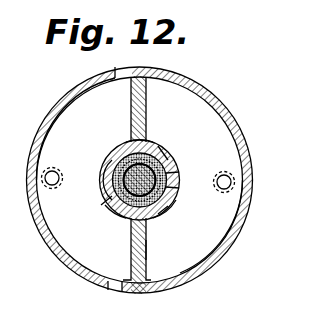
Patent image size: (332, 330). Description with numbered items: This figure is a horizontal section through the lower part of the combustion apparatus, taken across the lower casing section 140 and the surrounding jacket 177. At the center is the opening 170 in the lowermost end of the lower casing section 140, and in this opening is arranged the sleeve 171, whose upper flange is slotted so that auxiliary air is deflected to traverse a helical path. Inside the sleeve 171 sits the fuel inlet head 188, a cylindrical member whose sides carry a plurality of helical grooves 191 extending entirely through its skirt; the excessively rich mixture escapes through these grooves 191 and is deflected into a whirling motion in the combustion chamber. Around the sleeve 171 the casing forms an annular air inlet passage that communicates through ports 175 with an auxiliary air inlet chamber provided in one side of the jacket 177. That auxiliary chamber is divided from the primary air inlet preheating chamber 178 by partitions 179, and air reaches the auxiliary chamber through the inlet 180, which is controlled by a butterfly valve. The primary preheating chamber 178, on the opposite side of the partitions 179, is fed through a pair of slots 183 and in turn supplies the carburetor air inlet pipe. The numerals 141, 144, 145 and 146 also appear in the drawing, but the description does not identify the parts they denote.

The lower casing section 140 is at (140, 185).
The hub bore 141 is at (118, 183).
The hub flange 144 is at (122, 203).
The hub flange 145 is at (152, 218).
The web rib 146 is at (147, 240).
The opening 170 is at (168, 207).
The sleeve 171 is at (128, 173).
The ports 175 is at (151, 147).
The jacket 177 is at (241, 236).
The primary air inlet preheating chamber 178 is at (75, 129).
The partitions 179 is at (147, 98).
The inlet 180 is at (231, 183).
The slots 183 is at (123, 67).
The fuel inlet head 188 is at (131, 186).
The helical grooves 191 is at (116, 171).